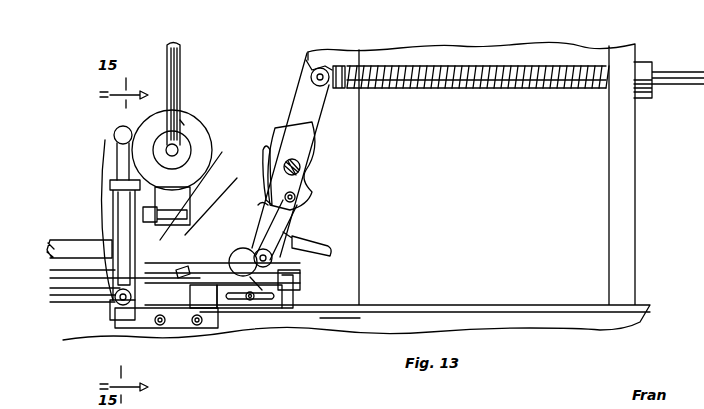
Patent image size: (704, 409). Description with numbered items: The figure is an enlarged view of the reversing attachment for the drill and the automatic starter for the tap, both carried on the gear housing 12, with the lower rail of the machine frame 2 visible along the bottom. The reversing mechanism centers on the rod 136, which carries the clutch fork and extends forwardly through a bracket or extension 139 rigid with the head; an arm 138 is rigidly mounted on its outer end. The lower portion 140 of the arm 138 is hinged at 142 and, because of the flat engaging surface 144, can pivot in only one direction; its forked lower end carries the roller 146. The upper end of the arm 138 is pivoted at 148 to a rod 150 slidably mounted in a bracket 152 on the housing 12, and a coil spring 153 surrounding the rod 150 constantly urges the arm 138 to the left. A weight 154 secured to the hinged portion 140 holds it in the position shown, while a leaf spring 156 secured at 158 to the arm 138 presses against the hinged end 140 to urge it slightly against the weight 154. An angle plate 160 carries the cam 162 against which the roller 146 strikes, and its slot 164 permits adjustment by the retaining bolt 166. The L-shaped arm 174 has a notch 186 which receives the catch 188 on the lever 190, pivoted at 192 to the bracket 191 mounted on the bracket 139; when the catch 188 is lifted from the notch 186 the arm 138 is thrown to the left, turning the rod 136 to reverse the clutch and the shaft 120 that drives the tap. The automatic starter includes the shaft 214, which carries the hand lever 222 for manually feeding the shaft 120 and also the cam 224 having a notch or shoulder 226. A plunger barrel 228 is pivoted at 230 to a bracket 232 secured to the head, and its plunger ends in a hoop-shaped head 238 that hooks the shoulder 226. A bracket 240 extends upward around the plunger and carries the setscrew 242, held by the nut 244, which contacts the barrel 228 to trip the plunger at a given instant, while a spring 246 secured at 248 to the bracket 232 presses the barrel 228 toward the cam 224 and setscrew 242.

The housing 12 is at (540, 52).
The rod 150 is at (420, 70).
The coil spring 153 is at (497, 70).
The bracket 152 is at (643, 65).
The pivot 148 is at (323, 75).
The bracket or extension 139 is at (310, 66).
The flat engaging surface 144 is at (288, 140).
The securing point 158 is at (265, 145).
The arm 138 is at (312, 127).
The rod 136 is at (300, 167).
The hinge 142 is at (297, 197).
The lower portion of the arm 140 is at (283, 217).
The weight 154 is at (330, 247).
The roller 146 is at (300, 268).
The pivot 192 is at (252, 255).
The lever 190 is at (197, 268).
The shaft 214 is at (176, 146).
The hand lever 222 is at (168, 48).
The cam 224 is at (184, 120).
The nut 244 is at (207, 158).
The setscrew 242 is at (202, 191).
The bracket 191 is at (219, 198).
The L-shaped arm 174 is at (240, 258).
The plunger barrel 228 is at (120, 210).
The hoop-shaped head 238 is at (118, 136).
The notch or shoulder 226 is at (110, 147).
The shaft 120 is at (73, 248).
The bracket 240 is at (100, 283).
The spring 246 is at (112, 298).
The pivot 230 is at (120, 305).
The securing point 248 is at (116, 318).
The bracket 232 is at (140, 325).
The notch 186 is at (182, 308).
The slot 164 is at (228, 308).
The retaining bolt 166 is at (250, 300).
The cam 162 is at (250, 277).
The angle plate 160 is at (278, 298).
The catch 188 is at (180, 272).
The leaf spring 156 is at (264, 204).
The table 2 is at (360, 318).